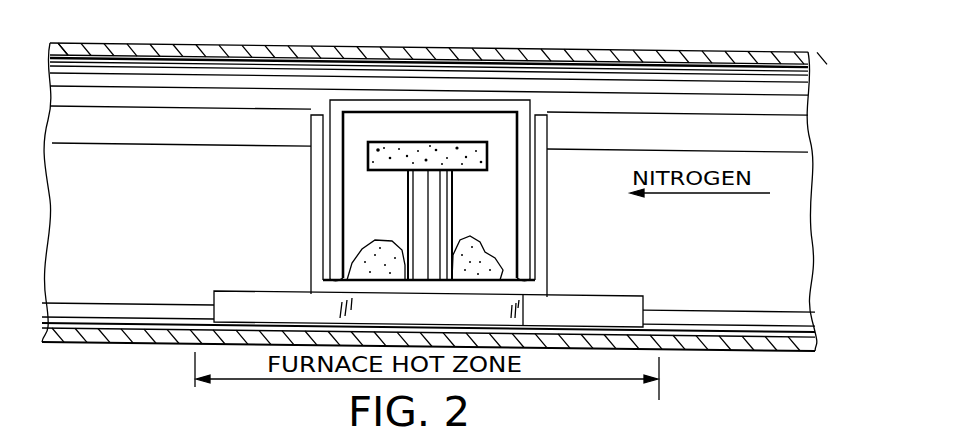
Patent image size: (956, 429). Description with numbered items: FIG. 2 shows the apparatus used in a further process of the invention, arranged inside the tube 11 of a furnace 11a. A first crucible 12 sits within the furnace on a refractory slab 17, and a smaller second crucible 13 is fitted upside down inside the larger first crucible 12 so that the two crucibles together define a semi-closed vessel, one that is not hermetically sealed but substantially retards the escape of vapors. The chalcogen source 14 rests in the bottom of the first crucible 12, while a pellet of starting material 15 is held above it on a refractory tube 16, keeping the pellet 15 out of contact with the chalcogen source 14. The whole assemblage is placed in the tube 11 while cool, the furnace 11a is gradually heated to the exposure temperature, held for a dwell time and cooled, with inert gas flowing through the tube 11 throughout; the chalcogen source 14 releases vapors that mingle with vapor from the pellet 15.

The tube 11 is at (712, 349).
The furnace 11a is at (745, 49).
The first crucible 12 is at (548, 226).
The second crucible 13 is at (479, 106).
The chalcogen source 14 is at (471, 245).
The pellet of starting material 15 is at (383, 143).
The refractory tube 16 is at (418, 201).
The refractory slab 17 is at (613, 302).